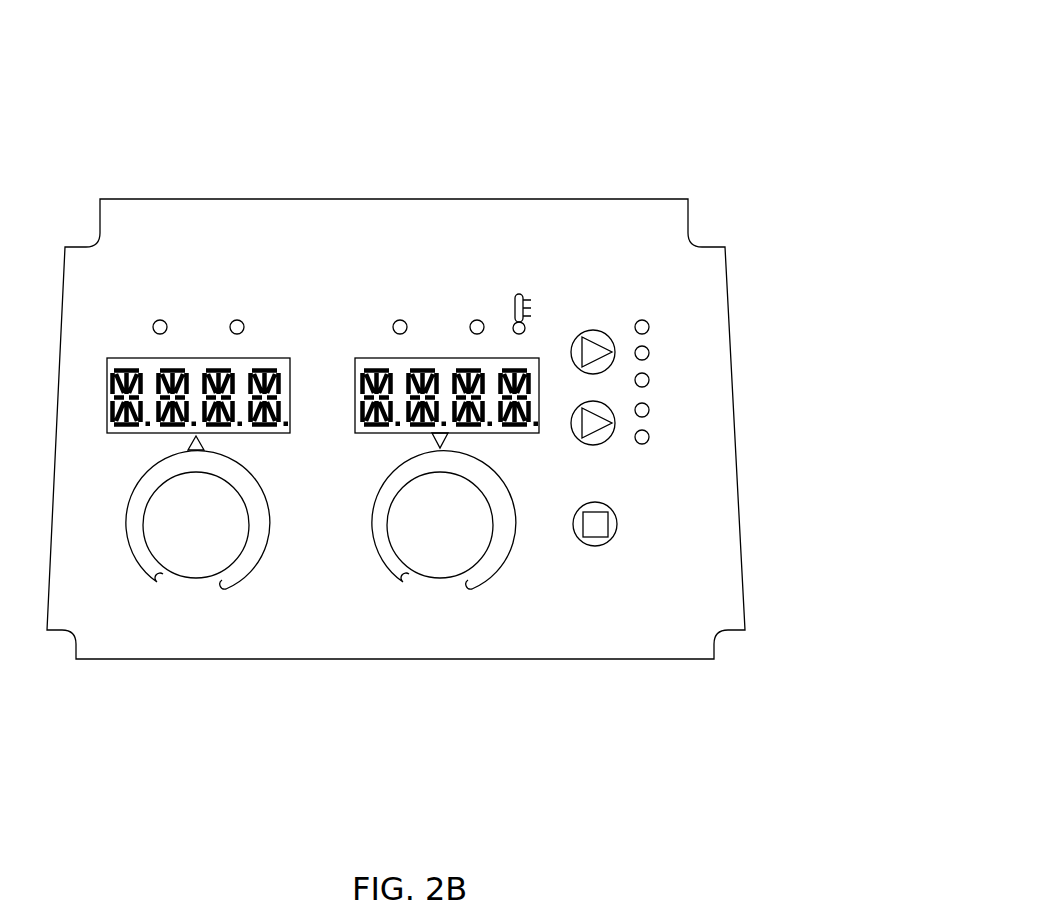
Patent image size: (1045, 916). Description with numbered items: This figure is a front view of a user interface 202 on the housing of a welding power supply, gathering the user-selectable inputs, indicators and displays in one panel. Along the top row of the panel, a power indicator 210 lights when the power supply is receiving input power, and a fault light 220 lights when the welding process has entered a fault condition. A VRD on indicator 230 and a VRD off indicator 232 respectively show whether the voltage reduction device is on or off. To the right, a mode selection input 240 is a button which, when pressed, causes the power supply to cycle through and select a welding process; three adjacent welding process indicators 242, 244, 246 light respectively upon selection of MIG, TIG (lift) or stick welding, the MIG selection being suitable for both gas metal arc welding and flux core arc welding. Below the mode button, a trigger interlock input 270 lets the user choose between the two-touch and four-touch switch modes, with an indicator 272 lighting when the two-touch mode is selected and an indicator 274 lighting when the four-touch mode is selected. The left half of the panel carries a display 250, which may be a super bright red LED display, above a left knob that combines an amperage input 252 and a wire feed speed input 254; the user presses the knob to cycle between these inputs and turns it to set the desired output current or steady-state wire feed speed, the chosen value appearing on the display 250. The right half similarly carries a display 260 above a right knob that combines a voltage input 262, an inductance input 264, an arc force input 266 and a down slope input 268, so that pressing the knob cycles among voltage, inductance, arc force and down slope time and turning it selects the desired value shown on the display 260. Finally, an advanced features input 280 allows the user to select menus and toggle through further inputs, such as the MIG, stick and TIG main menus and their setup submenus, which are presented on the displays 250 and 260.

The user interface 202 is at (650, 63).
The power indicator 210 is at (398, 336).
The fault light 220 is at (475, 336).
The VRD on indicator 230 is at (162, 314).
The VRD off indicator 232 is at (240, 314).
The mode selection input 240 is at (588, 330).
The welding process indicator 242 is at (640, 320).
The welding process indicator 244 is at (645, 348).
The welding process indicator 246 is at (649, 376).
The display 250 is at (258, 443).
The amperage input 252 is at (151, 595).
The wire feed speed input 254 is at (196, 566).
The display 260 is at (377, 443).
The voltage input 262 is at (554, 595).
The inductance input 264 is at (554, 595).
The arc force input 266 is at (554, 595).
The down slope input 268 is at (458, 571).
The trigger interlock input 270 is at (577, 404).
The 2T mode indicator 272 is at (649, 404).
The 4T mode indicator 274 is at (648, 444).
The advanced features input 280 is at (614, 543).